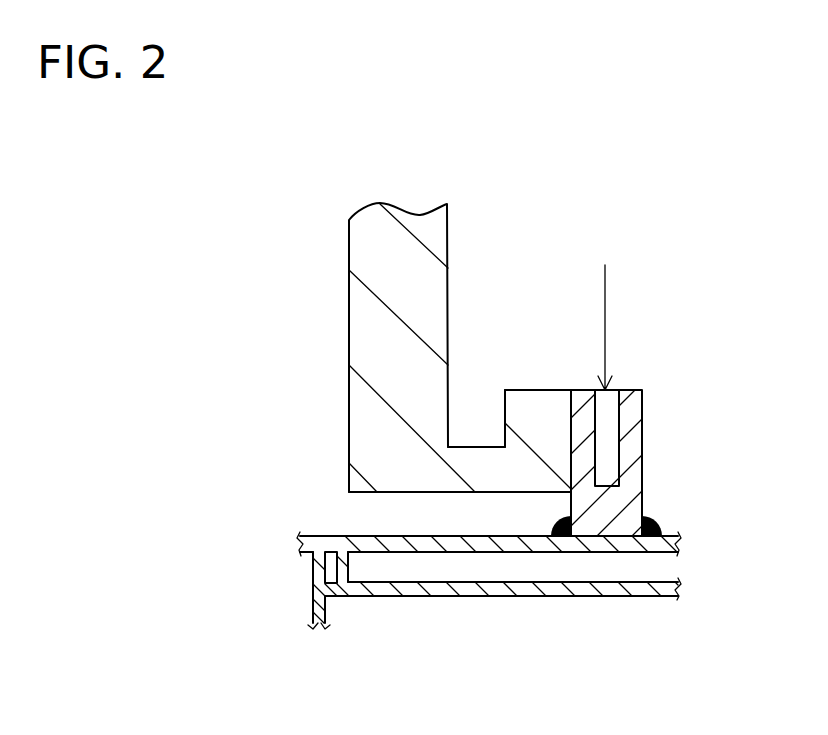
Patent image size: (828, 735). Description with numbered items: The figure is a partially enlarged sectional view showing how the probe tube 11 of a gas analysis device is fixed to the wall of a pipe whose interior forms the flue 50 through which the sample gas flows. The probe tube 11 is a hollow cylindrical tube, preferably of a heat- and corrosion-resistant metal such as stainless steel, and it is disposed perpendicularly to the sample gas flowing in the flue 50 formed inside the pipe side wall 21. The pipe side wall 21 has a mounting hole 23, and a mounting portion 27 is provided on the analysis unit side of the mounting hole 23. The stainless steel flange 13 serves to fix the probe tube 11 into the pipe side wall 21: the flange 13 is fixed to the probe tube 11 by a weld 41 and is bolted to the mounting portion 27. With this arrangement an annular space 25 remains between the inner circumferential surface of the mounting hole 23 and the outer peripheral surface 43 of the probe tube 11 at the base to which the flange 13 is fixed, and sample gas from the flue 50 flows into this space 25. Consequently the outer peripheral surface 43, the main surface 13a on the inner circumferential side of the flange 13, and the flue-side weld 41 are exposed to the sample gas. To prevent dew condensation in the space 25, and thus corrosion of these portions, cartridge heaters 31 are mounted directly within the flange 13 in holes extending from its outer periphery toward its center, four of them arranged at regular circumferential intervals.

The probe tube 11 is at (638, 602).
The flange 13 is at (633, 417).
The main surface 13a is at (569, 497).
The pipe side wall 21 is at (393, 234).
The mounting hole 23 is at (407, 499).
The annular space 25 is at (338, 516).
The mounting portion 27 is at (534, 414).
The heater 31 is at (611, 465).
The weld 41 is at (557, 535).
The outer peripheral surface 43 is at (484, 538).
The flue 50 is at (238, 322).